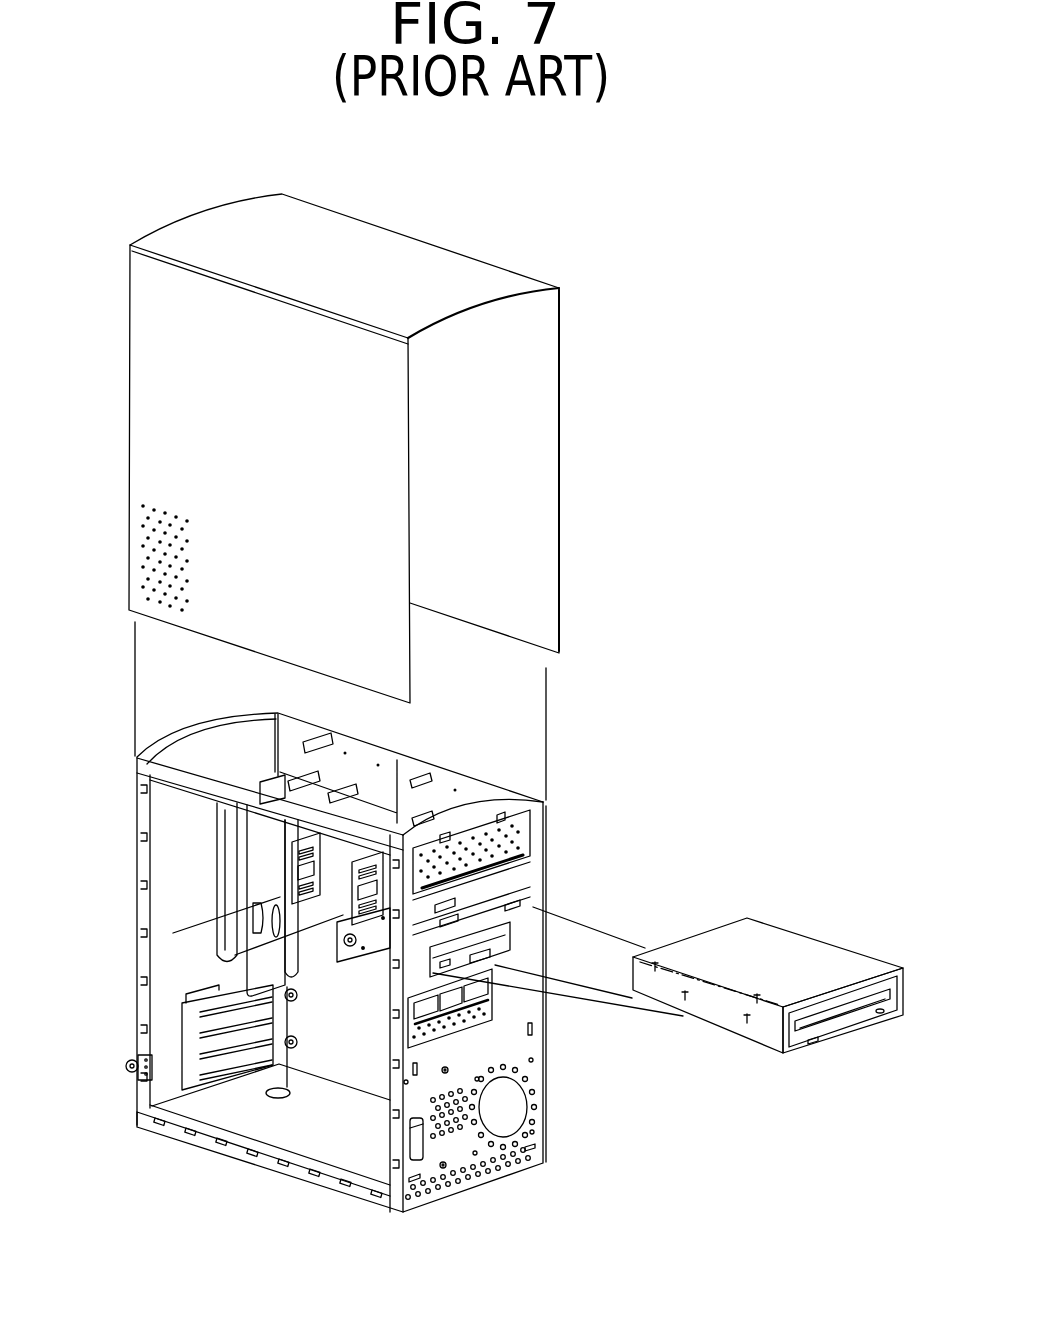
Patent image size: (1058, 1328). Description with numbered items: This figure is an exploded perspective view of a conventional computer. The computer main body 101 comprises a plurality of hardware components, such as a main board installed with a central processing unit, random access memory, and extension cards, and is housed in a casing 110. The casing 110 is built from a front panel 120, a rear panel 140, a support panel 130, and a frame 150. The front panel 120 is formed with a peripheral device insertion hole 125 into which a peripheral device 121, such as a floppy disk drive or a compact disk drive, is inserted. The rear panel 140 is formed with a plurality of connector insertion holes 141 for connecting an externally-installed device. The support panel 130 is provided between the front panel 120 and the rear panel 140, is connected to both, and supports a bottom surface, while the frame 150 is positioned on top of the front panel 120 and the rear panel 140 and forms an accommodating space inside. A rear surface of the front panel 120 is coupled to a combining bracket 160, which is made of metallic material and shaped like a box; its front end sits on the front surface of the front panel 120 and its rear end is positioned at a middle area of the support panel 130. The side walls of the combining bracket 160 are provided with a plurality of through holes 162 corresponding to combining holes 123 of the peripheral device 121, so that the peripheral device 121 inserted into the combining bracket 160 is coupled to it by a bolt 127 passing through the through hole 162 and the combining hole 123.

The computer main body 101 is at (633, 536).
The casing 110 is at (333, 1260).
The front panel 120 is at (393, 1168).
The peripheral device 121 is at (830, 955).
The combining hole 123 is at (745, 1030).
The peripheral device insertion hole 125 is at (521, 888).
The bolt 127 is at (173, 933).
The support panel 130 is at (313, 1160).
The rear panel 140 is at (135, 1090).
The connector insertion hole 141 is at (235, 955).
The frame 150 is at (560, 336).
The combining bracket 160 is at (257, 868).
The through hole 162 is at (497, 975).